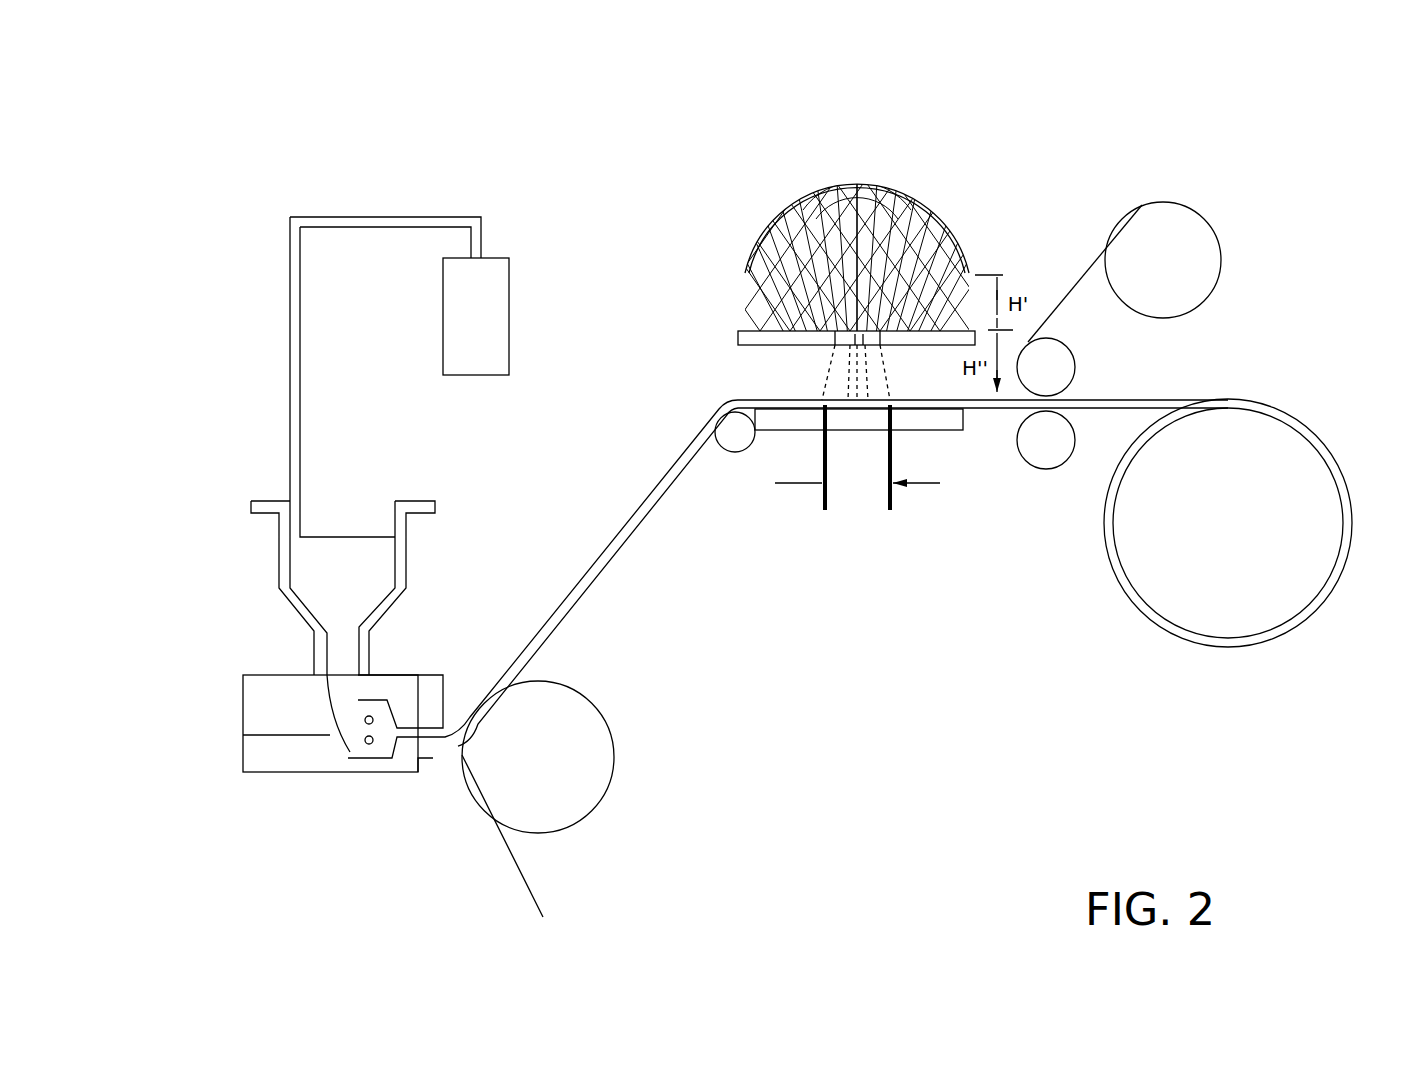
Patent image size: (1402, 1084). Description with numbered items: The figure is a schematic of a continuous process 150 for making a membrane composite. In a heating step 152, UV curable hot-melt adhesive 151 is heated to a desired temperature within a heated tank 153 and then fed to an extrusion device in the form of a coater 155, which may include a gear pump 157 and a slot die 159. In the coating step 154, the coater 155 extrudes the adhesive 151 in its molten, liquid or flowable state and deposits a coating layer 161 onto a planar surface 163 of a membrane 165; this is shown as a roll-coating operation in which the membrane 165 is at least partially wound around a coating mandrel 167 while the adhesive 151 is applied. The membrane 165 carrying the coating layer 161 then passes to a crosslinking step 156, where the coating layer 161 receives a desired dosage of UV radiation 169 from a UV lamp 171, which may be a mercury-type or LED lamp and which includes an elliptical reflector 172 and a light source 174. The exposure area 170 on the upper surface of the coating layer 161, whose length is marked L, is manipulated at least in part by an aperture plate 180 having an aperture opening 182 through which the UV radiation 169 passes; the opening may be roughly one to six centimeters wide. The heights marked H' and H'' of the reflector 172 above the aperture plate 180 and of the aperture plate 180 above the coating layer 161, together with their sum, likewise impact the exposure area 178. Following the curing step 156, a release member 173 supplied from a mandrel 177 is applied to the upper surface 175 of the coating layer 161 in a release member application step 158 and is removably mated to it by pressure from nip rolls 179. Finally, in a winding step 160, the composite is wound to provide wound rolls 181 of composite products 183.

The continuous process 150 is at (675, 237).
The UV curable hot-melt adhesive 151 is at (367, 569).
The heating step 152 is at (552, 518).
The heated tank 153 is at (397, 603).
The coating step 154 is at (405, 815).
The coater 155 is at (293, 772).
The crosslinking step 156 is at (720, 268).
The gear pump 157 is at (365, 745).
The release member application step 158 is at (1068, 260).
The slot die 159 is at (415, 725).
The winding step 160 is at (1093, 593).
The coating layer 161 is at (555, 602).
The planar surface 163 is at (607, 560).
The membrane 165 is at (525, 888).
The coating mandrel 167 is at (612, 718).
The UV radiation 169 is at (750, 318).
The exposure area 170 is at (905, 392).
The UV lamp 171 is at (918, 133).
The elliptical reflector 172 is at (965, 195).
The release member 173 is at (1053, 313).
The light source 174 is at (820, 200).
The upper surface 175 is at (1022, 404).
The mandrel 177 is at (1215, 232).
The exposure area 178 is at (827, 388).
The nip rolls 179 is at (1025, 480).
The aperture plate 180 is at (740, 343).
The wound rolls 181 is at (1193, 643).
The aperture opening 182 is at (836, 345).
The composite products 183 is at (1138, 400).